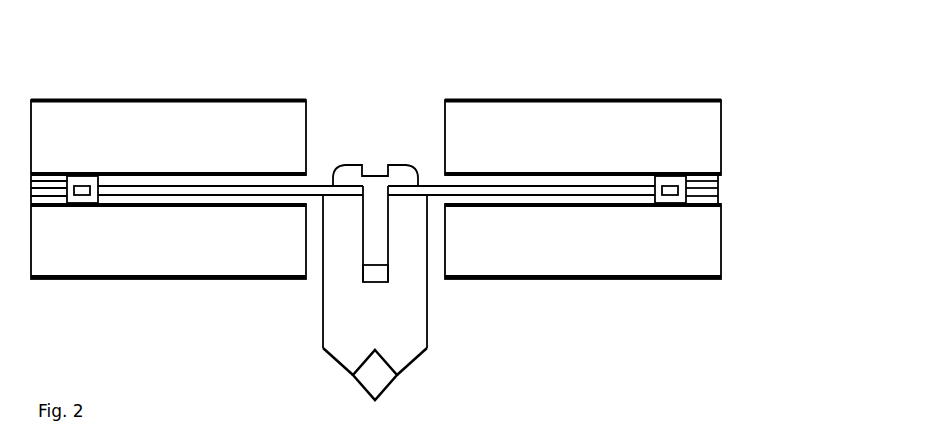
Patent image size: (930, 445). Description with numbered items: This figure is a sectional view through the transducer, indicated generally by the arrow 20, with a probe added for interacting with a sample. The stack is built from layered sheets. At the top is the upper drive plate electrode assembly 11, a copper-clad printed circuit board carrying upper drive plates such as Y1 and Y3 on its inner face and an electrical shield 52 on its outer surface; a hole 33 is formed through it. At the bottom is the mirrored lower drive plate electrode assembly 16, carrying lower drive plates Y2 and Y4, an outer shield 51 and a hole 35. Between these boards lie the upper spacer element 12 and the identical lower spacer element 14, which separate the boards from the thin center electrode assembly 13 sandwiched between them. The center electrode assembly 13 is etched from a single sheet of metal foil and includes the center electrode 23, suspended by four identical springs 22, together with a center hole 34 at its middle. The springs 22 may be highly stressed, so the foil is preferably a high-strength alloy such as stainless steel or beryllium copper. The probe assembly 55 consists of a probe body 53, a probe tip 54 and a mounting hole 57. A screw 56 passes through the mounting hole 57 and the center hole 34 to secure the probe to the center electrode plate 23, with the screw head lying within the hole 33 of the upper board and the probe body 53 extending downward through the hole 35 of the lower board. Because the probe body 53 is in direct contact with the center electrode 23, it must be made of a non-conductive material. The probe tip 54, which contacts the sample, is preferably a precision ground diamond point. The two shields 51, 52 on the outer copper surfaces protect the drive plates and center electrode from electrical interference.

The upper drive plate electrode assembly 11 is at (722, 128).
The upper spacer element 12 is at (720, 180).
The center electrode assembly 13 is at (720, 188).
The lower spacer element 14 is at (720, 200).
The lower drive plate electrode assembly 16 is at (723, 252).
The sensor assembly 20 is at (710, 75).
The springs 22 is at (668, 196).
The center electrode 23 is at (602, 190).
The hole 33 is at (307, 135).
The center hole 34 is at (397, 190).
The hole 35 is at (309, 248).
The shield 51 is at (460, 280).
The shield 52 is at (467, 100).
The probe body 53 is at (322, 337).
The probe tip 54 is at (363, 388).
The probe assembly 55 is at (323, 368).
The screw 56 is at (408, 165).
The mounting hole 57 is at (363, 272).
The upper drive plate Y1 is at (228, 176).
The lower drive plate Y2 is at (228, 203).
The upper drive plate Y3 is at (557, 176).
The lower drive plate Y4 is at (557, 203).